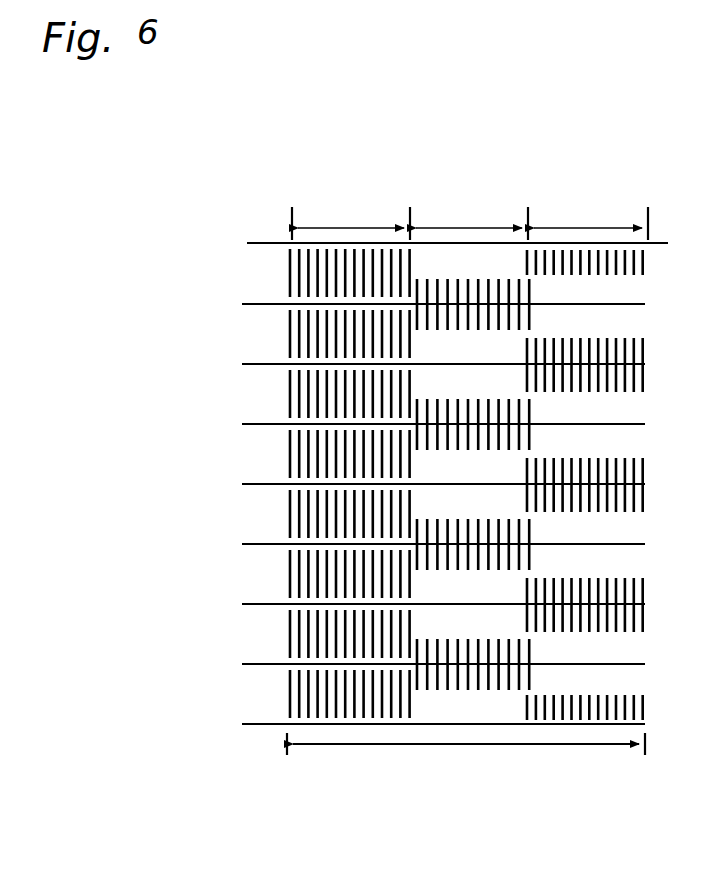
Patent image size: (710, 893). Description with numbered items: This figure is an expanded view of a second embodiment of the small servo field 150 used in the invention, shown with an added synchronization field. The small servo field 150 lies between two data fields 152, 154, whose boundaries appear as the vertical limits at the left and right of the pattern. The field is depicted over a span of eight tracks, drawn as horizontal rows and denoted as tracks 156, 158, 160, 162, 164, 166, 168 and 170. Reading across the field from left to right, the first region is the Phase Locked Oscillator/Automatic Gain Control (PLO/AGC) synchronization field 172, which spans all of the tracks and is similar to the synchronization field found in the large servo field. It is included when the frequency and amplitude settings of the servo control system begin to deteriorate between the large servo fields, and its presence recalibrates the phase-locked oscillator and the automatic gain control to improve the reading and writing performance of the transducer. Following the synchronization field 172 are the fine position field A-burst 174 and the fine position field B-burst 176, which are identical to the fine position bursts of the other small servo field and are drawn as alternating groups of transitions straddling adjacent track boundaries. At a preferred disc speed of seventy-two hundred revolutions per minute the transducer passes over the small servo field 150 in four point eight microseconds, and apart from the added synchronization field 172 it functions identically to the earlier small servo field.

The small servo field 150 is at (446, 761).
The data field 152 is at (276, 218).
The data field 154 is at (656, 218).
The track 156 is at (257, 290).
The track 158 is at (255, 349).
The track 160 is at (253, 410).
The track 162 is at (255, 469).
The track 164 is at (255, 527).
The track 166 is at (255, 584).
The track 168 is at (255, 645).
The track 170 is at (255, 701).
The PLO/AGC synchronization field 172 is at (345, 220).
The fine position field A-burst 174 is at (454, 218).
The fine position field B-burst 176 is at (583, 218).